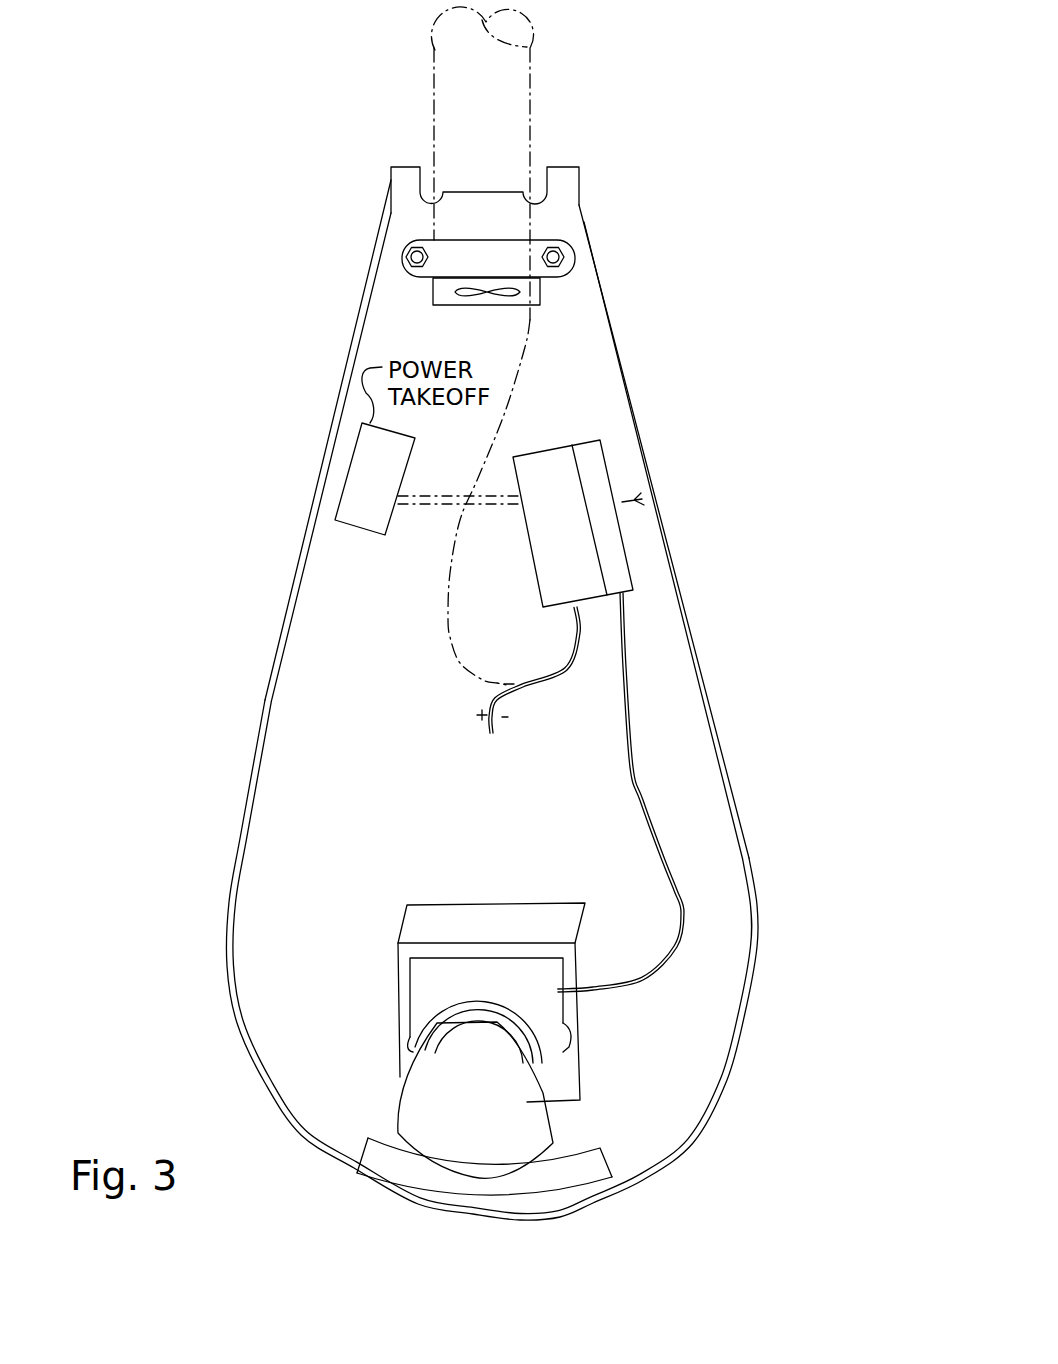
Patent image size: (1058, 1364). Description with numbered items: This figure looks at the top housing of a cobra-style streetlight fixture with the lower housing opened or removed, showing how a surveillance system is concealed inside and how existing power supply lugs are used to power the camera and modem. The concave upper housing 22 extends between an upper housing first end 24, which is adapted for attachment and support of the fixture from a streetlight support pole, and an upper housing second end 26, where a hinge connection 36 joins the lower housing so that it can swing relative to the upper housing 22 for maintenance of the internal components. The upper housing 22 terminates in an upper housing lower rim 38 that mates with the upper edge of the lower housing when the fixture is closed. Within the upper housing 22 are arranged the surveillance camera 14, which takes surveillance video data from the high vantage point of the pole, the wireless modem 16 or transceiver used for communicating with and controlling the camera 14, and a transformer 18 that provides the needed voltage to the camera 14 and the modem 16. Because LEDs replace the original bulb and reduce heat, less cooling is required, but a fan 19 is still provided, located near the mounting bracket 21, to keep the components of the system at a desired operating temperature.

The surveillance camera 14 is at (547, 1121).
The wireless modem 16 is at (633, 567).
The transformer 18 is at (545, 447).
The fan 19 is at (433, 297).
The mounting bracket 21 is at (406, 256).
The concave upper housing 22 is at (733, 782).
The upper housing first end 24 is at (587, 220).
The upper housing second end 26 is at (558, 1205).
The hinge connection 36 is at (391, 180).
The upper housing lower rim 38 is at (241, 829).